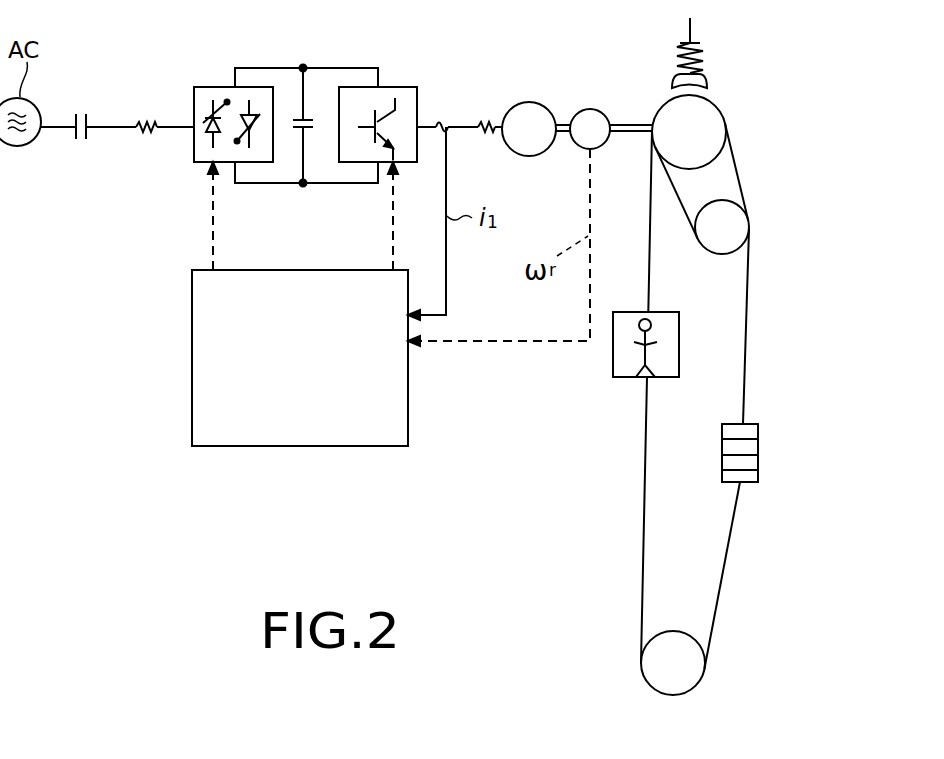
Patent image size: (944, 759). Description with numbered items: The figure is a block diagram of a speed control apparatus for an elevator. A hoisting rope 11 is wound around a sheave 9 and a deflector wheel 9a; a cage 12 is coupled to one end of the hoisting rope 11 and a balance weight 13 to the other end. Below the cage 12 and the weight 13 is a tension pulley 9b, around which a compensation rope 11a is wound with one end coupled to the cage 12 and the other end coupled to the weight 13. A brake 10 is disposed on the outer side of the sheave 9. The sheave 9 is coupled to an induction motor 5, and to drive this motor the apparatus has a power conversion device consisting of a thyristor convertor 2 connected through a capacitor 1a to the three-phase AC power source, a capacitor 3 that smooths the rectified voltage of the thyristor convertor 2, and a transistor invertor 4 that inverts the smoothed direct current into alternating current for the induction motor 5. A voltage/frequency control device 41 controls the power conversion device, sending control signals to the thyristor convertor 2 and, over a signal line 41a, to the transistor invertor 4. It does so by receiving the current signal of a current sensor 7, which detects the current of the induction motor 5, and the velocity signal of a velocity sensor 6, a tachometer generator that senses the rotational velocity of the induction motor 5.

The capacitor 1a is at (88, 112).
The thyristor convertor 2 is at (212, 86).
The capacitor 3 is at (304, 119).
The transistor invertor 4 is at (400, 86).
The induction motor 5 is at (536, 103).
The velocity sensor (tachometer generator) 6 is at (597, 110).
The current sensor 7 is at (446, 124).
The sheave 9 is at (716, 110).
The deflector wheel 9a is at (746, 228).
The tension pulley 9b is at (694, 674).
The brake 10 is at (707, 71).
The hoisting rope 11 is at (652, 262).
The compensation rope 11a is at (646, 530).
The cage 12 is at (679, 334).
The balance weight 13 is at (754, 440).
The voltage/frequency control device 41 is at (191, 355).
The control signal line 41a is at (391, 256).